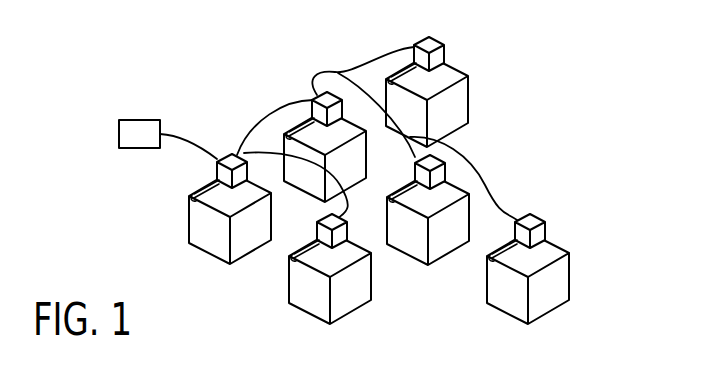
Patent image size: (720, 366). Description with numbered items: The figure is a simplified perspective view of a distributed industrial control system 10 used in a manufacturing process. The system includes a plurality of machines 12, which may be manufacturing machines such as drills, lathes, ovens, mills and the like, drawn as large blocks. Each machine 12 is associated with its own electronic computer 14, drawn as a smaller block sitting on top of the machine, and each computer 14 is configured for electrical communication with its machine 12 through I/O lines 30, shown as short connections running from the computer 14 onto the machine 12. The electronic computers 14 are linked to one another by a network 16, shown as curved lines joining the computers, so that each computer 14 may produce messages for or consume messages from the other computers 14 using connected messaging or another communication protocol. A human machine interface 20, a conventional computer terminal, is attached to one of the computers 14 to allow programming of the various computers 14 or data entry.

The distributed industrial control system 10 is at (618, 99).
The machine 12 is at (358, 292).
The electronic computer 14 is at (432, 38).
The network 16 is at (473, 174).
The human machine interface 20 is at (147, 120).
The I/O lines 30 is at (210, 177).